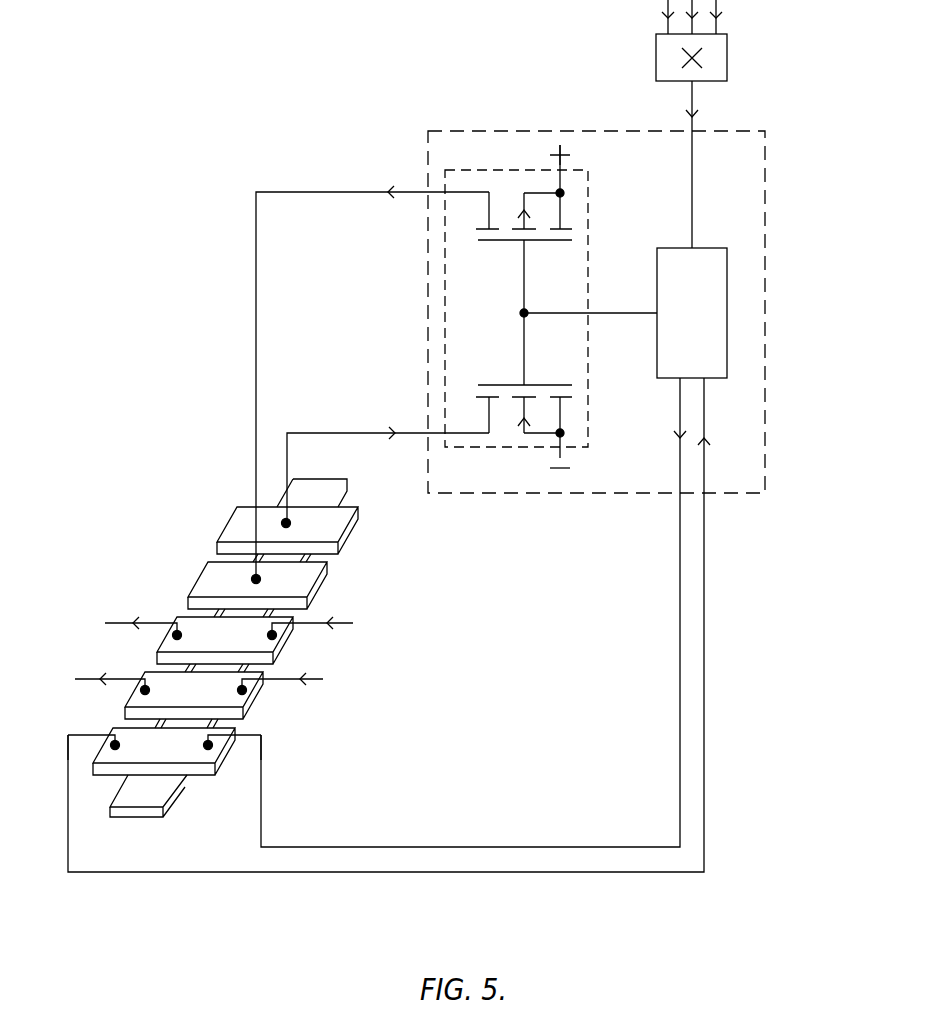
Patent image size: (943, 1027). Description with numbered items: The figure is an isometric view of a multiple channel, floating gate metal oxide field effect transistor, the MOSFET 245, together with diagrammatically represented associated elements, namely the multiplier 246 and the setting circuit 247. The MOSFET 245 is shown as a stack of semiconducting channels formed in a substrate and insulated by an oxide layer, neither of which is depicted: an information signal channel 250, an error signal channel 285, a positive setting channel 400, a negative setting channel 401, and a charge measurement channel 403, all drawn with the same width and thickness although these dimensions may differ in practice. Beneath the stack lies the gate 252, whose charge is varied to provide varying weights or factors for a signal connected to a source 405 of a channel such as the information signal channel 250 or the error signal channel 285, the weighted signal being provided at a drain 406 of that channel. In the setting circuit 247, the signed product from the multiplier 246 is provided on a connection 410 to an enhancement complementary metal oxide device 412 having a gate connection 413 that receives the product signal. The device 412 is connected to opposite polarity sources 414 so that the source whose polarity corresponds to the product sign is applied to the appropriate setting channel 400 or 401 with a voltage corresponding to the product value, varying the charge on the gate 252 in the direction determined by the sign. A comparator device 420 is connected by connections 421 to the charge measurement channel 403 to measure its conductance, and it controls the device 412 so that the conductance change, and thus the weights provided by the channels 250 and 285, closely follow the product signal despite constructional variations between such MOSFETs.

The multiplier 246 is at (751, 57).
The connection 410 is at (695, 95).
The setting circuit 247 is at (766, 208).
The enhancement complementary metal oxide (CMOS) device 412 is at (514, 170).
The gate connection 413 is at (518, 286).
The opposite polarity sources 414 is at (572, 152).
The comparator device 420 is at (657, 370).
The connections 421 is at (683, 708).
The MOSFET 245 is at (192, 482).
The negative setting channel 401 is at (355, 533).
The positive setting channel 400 is at (328, 580).
The error signal channel 285 is at (298, 638).
The drain 406 is at (145, 690).
The source 405 is at (273, 636).
The information signal channel 250 is at (243, 692).
The charge measurement channel 403 is at (113, 728).
The gate 252 is at (153, 820).